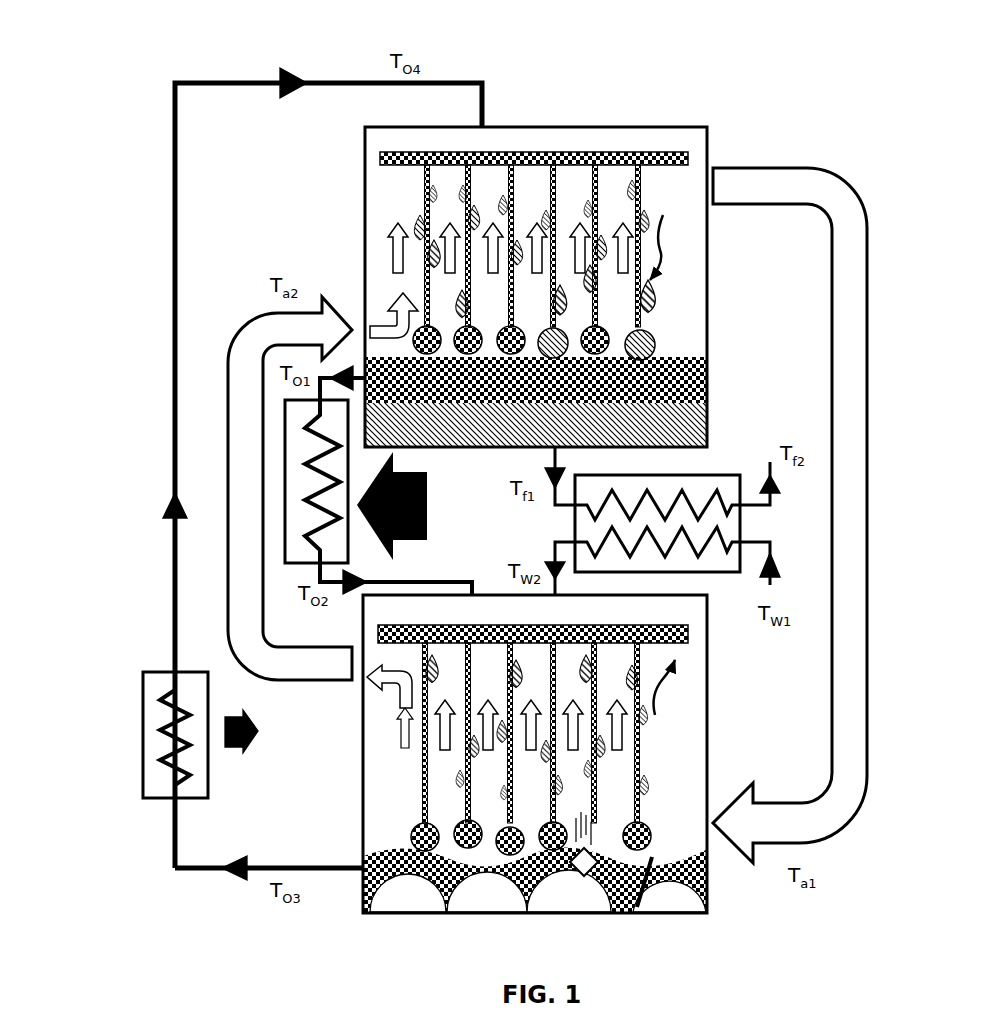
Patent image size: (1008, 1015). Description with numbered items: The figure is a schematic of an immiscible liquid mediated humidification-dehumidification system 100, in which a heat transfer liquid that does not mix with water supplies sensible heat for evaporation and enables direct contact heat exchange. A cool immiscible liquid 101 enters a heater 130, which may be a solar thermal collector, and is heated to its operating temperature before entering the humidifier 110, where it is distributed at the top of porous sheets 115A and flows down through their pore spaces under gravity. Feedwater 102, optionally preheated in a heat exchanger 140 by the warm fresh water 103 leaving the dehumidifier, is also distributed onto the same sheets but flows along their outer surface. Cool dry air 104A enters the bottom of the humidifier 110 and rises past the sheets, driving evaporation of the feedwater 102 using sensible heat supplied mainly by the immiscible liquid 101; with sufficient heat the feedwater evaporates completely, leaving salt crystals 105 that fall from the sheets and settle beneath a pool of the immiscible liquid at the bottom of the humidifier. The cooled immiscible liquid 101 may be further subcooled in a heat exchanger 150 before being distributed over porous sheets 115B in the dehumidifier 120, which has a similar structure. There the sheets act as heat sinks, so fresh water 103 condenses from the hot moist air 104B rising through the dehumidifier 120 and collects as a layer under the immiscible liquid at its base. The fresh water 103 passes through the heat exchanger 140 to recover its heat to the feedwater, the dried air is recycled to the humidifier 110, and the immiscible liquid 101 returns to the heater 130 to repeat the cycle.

The ILM-HDH system 100 is at (667, 66).
The immiscible liquid 101 is at (172, 445).
The feedwater 102 is at (548, 547).
The fresh water 103 is at (562, 460).
The cool dry air 104A is at (790, 515).
The hot moist air 104B is at (290, 488).
The salt crystals 105 is at (577, 894).
The humidifier 110 is at (533, 773).
The porous sheets 115A is at (462, 810).
The porous sheets 115B is at (419, 206).
The dehumidifier 120 is at (536, 275).
The heater 130 is at (377, 480).
The heat exchanger 140 is at (721, 470).
The heat exchanger 150 is at (140, 738).